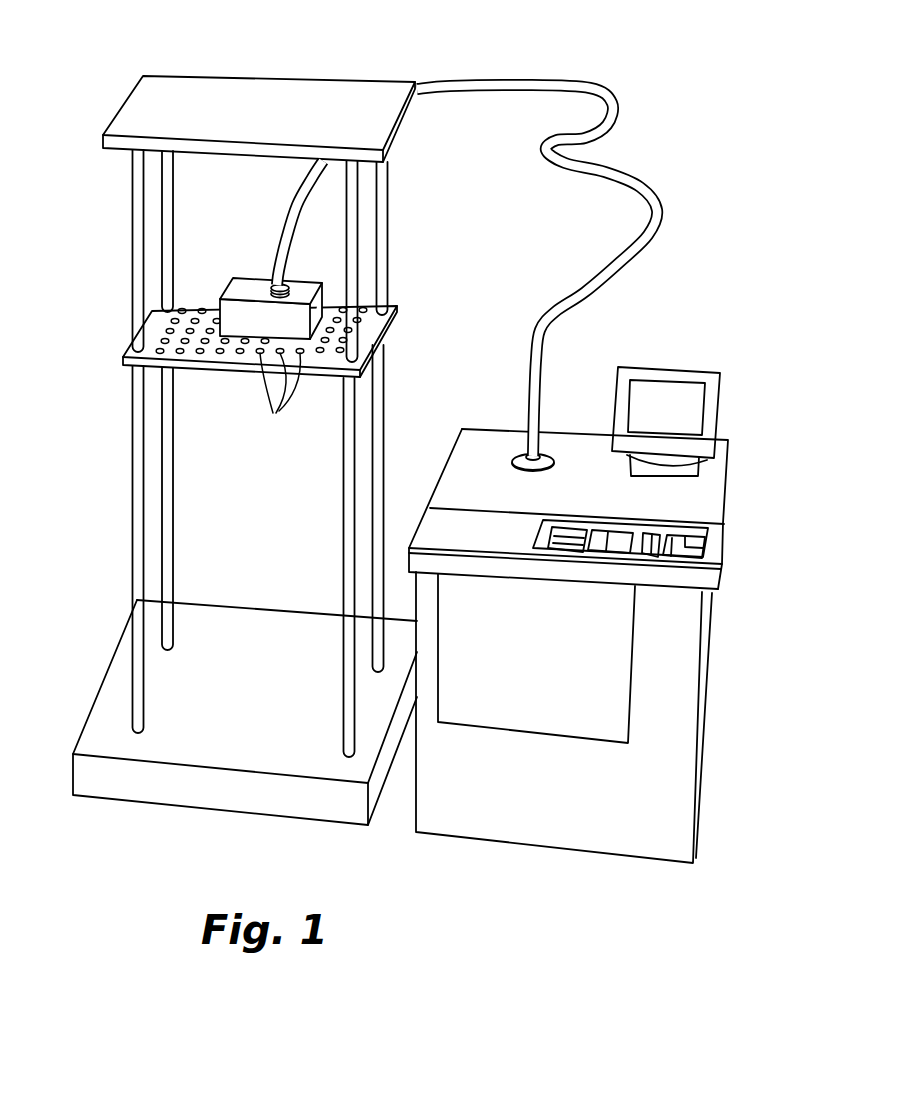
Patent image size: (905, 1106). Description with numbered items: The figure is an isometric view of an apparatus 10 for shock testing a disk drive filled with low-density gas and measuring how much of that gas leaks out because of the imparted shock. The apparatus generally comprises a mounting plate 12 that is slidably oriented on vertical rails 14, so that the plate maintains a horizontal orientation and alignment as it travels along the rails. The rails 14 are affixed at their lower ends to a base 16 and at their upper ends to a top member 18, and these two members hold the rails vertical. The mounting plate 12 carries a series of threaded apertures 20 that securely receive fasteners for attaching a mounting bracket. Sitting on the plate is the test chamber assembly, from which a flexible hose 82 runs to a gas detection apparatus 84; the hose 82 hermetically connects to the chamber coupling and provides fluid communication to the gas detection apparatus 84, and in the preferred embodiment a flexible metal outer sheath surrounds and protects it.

The apparatus 10 is at (643, 130).
The mounting plate 12 is at (150, 325).
The vertical rails 14 is at (384, 218).
The base 16 is at (108, 785).
The top member 18 is at (223, 90).
The threaded apertures 20 is at (279, 403).
The flexible hose 82 is at (652, 247).
The gas detection apparatus 84 is at (708, 494).